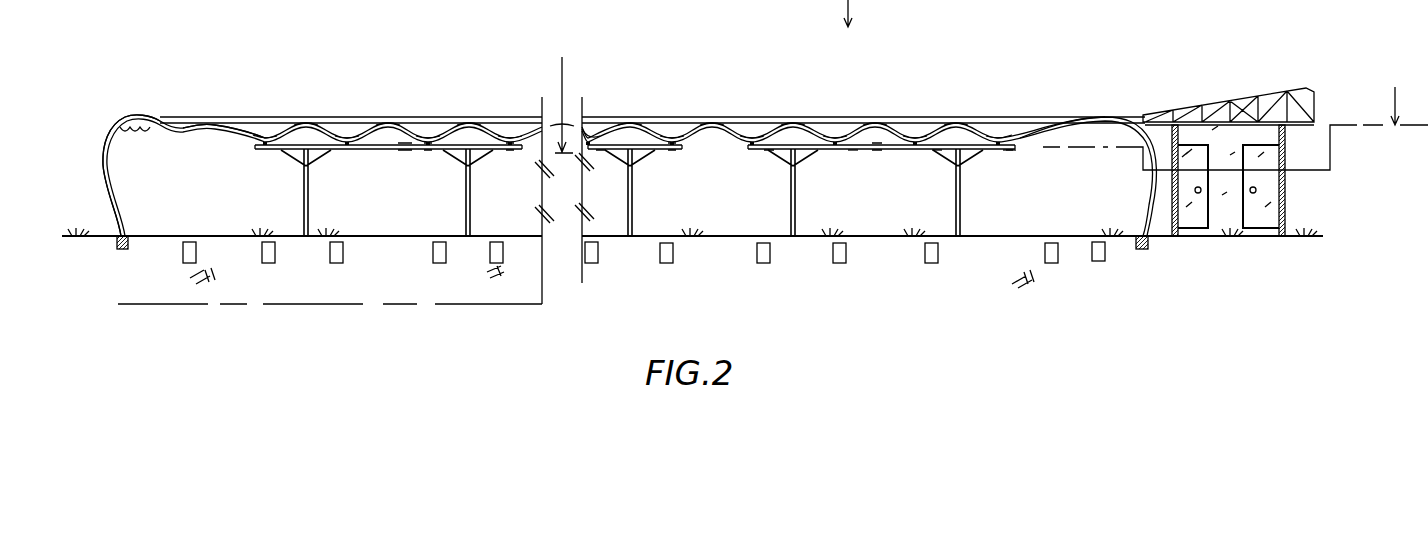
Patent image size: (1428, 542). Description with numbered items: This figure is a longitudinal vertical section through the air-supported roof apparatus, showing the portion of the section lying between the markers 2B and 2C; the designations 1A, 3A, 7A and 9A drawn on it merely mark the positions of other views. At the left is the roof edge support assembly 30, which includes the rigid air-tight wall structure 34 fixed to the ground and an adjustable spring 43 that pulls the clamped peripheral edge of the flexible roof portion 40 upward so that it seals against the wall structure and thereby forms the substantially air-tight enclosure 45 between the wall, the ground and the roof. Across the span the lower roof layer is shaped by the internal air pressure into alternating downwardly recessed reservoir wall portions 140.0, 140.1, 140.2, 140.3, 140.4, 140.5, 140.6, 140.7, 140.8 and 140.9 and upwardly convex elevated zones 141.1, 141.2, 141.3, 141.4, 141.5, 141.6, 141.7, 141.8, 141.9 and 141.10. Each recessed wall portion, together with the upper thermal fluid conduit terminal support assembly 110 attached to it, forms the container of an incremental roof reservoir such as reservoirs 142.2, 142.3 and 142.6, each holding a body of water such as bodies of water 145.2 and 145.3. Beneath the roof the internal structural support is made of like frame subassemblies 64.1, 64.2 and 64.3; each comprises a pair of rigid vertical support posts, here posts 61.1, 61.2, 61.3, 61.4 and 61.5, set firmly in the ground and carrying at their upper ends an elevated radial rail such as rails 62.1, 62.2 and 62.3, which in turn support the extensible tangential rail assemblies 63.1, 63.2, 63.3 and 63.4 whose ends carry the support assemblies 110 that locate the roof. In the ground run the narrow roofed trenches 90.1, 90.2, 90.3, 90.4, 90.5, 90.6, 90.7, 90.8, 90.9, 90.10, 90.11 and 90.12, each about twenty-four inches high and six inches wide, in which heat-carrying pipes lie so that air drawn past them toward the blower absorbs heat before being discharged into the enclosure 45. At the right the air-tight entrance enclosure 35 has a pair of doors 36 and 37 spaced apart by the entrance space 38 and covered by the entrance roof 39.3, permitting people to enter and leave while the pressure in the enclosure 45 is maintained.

The roof edge support assembly 30 is at (153, 97).
The wall structure 34 is at (104, 178).
The roof portion 40 is at (220, 124).
The adjustable spring 43 is at (132, 130).
The air-tight enclosure 45 is at (162, 208).
The reservoir wall portion 140.0 is at (261, 136).
The reservoir wall portion 140.1 is at (349, 136).
The reservoir wall portion 140.2 is at (424, 136).
The reservoir wall portion 140.3 is at (508, 134).
The reservoir wall portion 140.4 is at (586, 134).
The reservoir wall portion 140.5 is at (668, 139).
The reservoir wall portion 140.6 is at (750, 139).
The reservoir wall portion 140.7 is at (826, 139).
The reservoir wall portion 140.8 is at (916, 139).
The reservoir wall portion 140.9 is at (999, 142).
The elevated zone 141.1 is at (307, 121).
The elevated zone 141.2 is at (396, 129).
The elevated zone 141.3 is at (477, 127).
The elevated zone 141.4 is at (562, 129).
The elevated zone 141.5 is at (642, 119).
The elevated zone 141.6 is at (718, 119).
The elevated zone 141.7 is at (798, 119).
The elevated zone 141.8 is at (878, 119).
The elevated zone 141.9 is at (961, 118).
The elevated zone 141.10 is at (1058, 119).
The incremental roof reservoir 142.2 is at (467, 63).
The incremental roof reservoir 142.3 is at (543, 63).
The incremental roof reservoir 142.6 is at (770, 53).
The body of water 145.2 is at (428, 148).
The body of water 145.3 is at (510, 148).
The support post 61.1 is at (303, 204).
The support post 61.2 is at (465, 215).
The support post 61.3 is at (633, 218).
The support post 61.4 is at (790, 218).
The support post 61.5 is at (961, 217).
The radial rail 62.1 is at (402, 145).
The radial rail 62.2 is at (674, 148).
The radial rail 62.3 is at (877, 151).
The tangential rail assembly 63.1 is at (600, 152).
The tangential rail assembly 63.2 is at (854, 148).
The tangential rail assembly 63.3 is at (938, 148).
The tangential rail assembly 63.4 is at (1011, 148).
The internal frame subassembly 64.1 is at (288, 182).
The internal frame subassembly 64.2 is at (691, 153).
The internal frame subassembly 64.3 is at (978, 265).
The trench 90.1 is at (183, 256).
The trench 90.2 is at (262, 256).
The trench 90.3 is at (330, 256).
The trench 90.4 is at (433, 255).
The trench 90.5 is at (490, 255).
The trench 90.6 is at (591, 263).
The trench 90.7 is at (660, 256).
The trench 90.8 is at (757, 252).
The trench 90.9 is at (833, 252).
The trench 90.10 is at (925, 252).
The trench 90.11 is at (1045, 249).
The trench 90.12 is at (1100, 261).
The upper thermal fluid conduit terminal support assembly 110 is at (1008, 151).
The entrance roof 39.3 is at (1185, 109).
The entrance space 38 is at (1225, 144).
The door 36 is at (1188, 212).
The door 37 is at (1256, 212).
The entrance enclosure 35 is at (1287, 260).
The view direction arrow 1A is at (1334, 189).
The sectional view portion 2B is at (121, 293).
The sectional view portion 2C is at (546, 296).
The detail region 3A is at (1147, 103).
The section line 7A is at (980, 92).
The detail arrow 9A is at (953, 184).